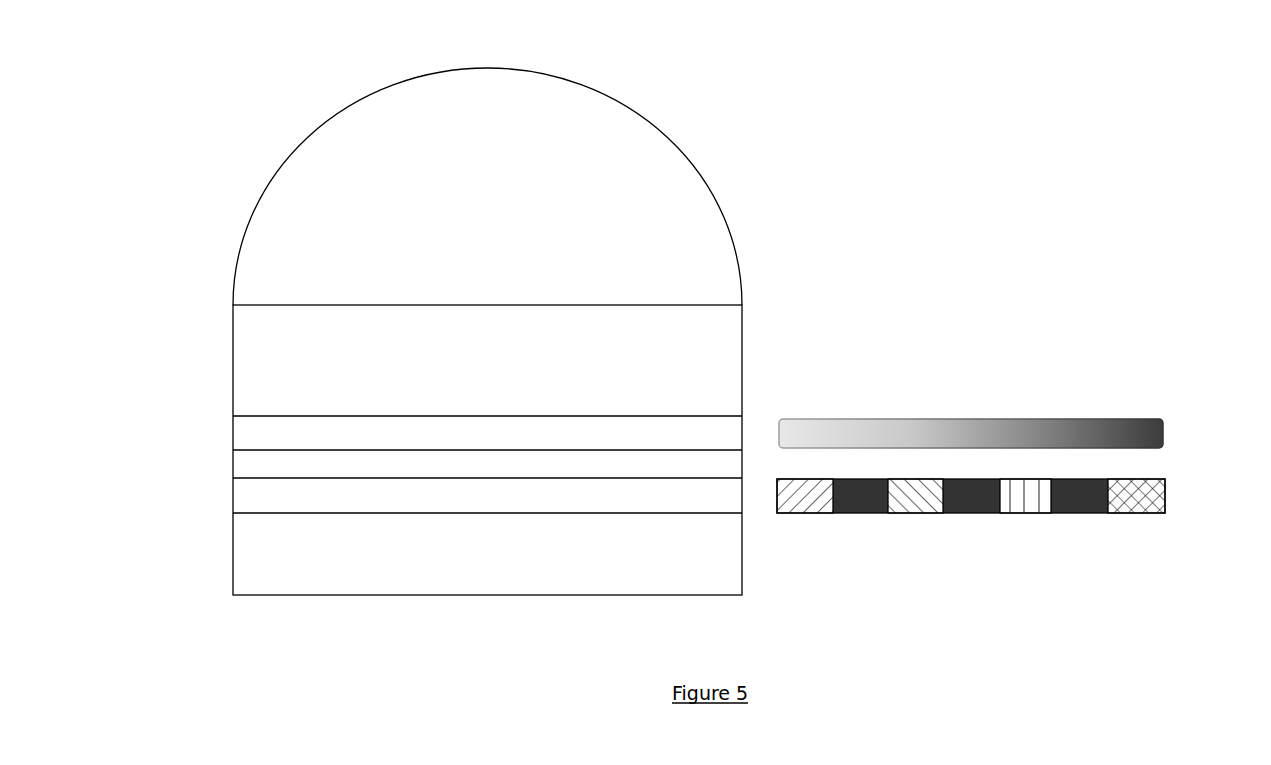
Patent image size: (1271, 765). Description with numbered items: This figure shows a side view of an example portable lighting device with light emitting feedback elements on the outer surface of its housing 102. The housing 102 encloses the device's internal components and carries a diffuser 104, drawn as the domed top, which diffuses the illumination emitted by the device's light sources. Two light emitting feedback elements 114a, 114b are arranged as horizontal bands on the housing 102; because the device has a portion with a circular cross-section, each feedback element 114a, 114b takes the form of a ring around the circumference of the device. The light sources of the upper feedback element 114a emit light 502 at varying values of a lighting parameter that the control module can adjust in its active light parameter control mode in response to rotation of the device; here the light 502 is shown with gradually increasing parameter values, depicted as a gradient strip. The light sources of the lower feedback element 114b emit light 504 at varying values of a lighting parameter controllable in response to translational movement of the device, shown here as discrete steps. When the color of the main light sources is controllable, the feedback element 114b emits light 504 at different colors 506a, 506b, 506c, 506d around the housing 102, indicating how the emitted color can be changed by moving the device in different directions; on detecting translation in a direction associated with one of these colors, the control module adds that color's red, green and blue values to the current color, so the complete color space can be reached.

The diffuser 104 is at (667, 143).
The housing 102 is at (742, 357).
The light emitting feedback element 114a is at (233, 433).
The light emitting feedback element 114b is at (233, 496).
The light 502 is at (1165, 409).
The light 504 is at (1016, 515).
The color 506a is at (806, 513).
The color 506b is at (915, 513).
The color 506c is at (1027, 513).
The color 506d is at (1137, 513).